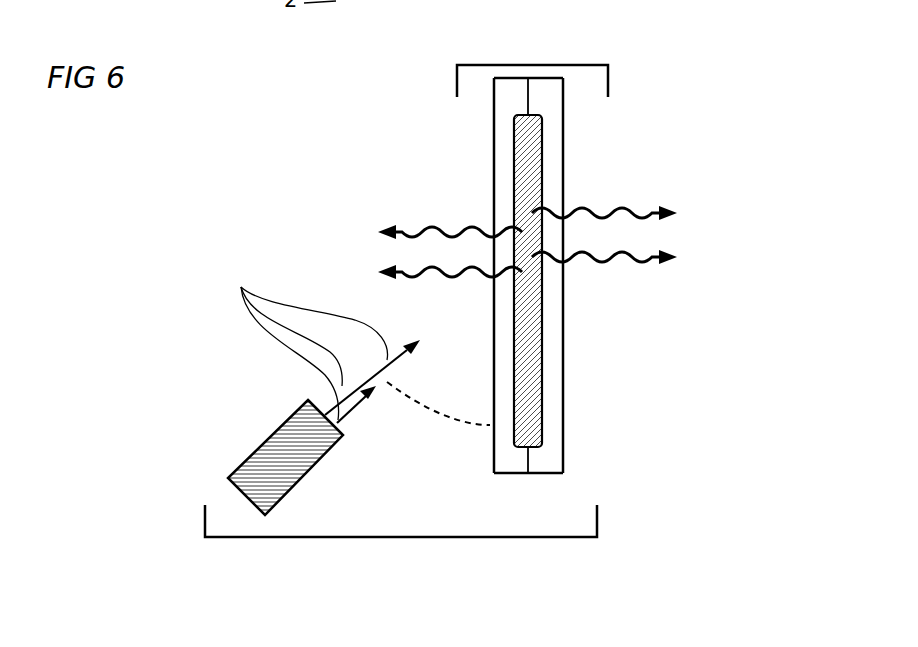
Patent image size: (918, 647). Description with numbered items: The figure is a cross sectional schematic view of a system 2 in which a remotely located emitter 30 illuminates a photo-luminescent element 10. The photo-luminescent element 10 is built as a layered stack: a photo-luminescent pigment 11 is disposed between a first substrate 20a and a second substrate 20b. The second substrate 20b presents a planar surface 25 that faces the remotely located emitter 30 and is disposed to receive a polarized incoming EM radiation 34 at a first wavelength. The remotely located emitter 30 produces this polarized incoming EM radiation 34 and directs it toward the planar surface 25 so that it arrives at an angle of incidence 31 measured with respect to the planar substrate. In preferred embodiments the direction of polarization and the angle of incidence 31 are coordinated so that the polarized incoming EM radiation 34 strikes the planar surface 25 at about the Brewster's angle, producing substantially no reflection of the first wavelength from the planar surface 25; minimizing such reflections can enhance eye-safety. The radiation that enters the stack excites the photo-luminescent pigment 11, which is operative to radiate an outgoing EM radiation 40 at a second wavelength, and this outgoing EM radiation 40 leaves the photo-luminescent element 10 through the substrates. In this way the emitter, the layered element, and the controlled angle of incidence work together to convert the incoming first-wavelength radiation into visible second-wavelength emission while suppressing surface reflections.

The system 2 is at (402, 538).
The photo-luminescent element 10 is at (533, 65).
The photo-luminescent pigment 11 is at (542, 328).
The first substrate 20a is at (563, 411).
The second substrate 20b is at (494, 450).
The planar surface 25 is at (494, 155).
The remotely located emitter 30 is at (237, 465).
The angle of incidence 31 is at (428, 412).
The polarized incoming EM radiation 34 is at (324, 338).
The outgoing EM radiation 40 is at (462, 225).